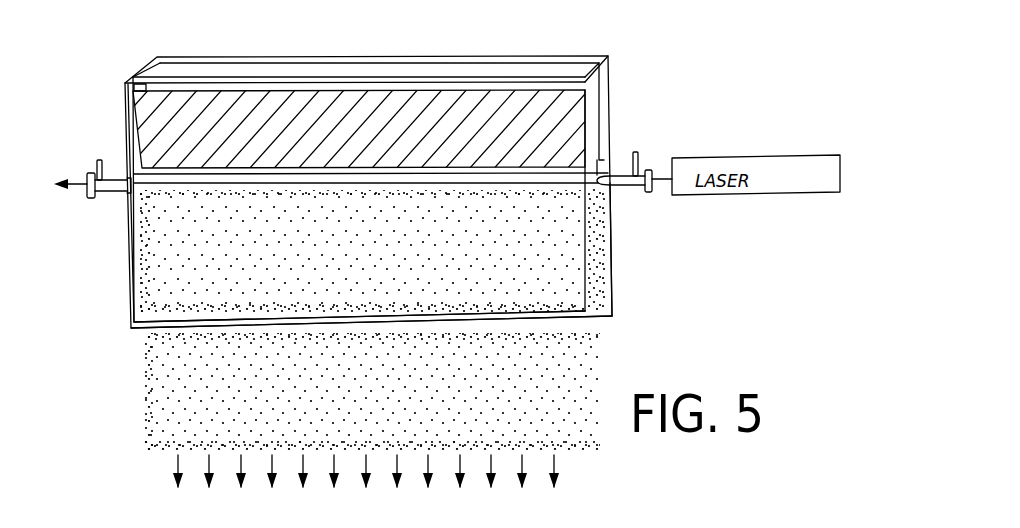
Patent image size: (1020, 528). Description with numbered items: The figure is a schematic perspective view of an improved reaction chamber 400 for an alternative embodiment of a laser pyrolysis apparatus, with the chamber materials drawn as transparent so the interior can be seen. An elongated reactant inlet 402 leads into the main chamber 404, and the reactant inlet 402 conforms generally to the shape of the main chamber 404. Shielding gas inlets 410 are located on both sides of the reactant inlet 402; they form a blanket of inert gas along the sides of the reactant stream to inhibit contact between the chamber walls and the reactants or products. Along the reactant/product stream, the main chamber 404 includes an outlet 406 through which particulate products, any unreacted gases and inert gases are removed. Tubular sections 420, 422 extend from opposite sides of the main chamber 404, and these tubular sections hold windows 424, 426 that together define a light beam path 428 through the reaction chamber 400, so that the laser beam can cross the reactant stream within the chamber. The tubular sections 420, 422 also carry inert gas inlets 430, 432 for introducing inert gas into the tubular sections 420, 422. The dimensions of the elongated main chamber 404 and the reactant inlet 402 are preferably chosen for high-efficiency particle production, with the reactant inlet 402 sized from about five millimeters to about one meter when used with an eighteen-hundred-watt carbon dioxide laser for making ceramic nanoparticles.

The reaction chamber 400 is at (124, 303).
The reactant inlet 402 is at (312, 70).
The main chamber 404 is at (602, 225).
The outlet 406 is at (609, 292).
The shielding gas inlets 410 is at (272, 82).
The tubular section 420 is at (620, 188).
The tubular section 422 is at (107, 194).
The window 424 is at (648, 170).
The window 426 is at (83, 196).
The light beam path 428 is at (128, 200).
The inert gas inlet 430 is at (635, 152).
The inert gas inlet 432 is at (99, 160).